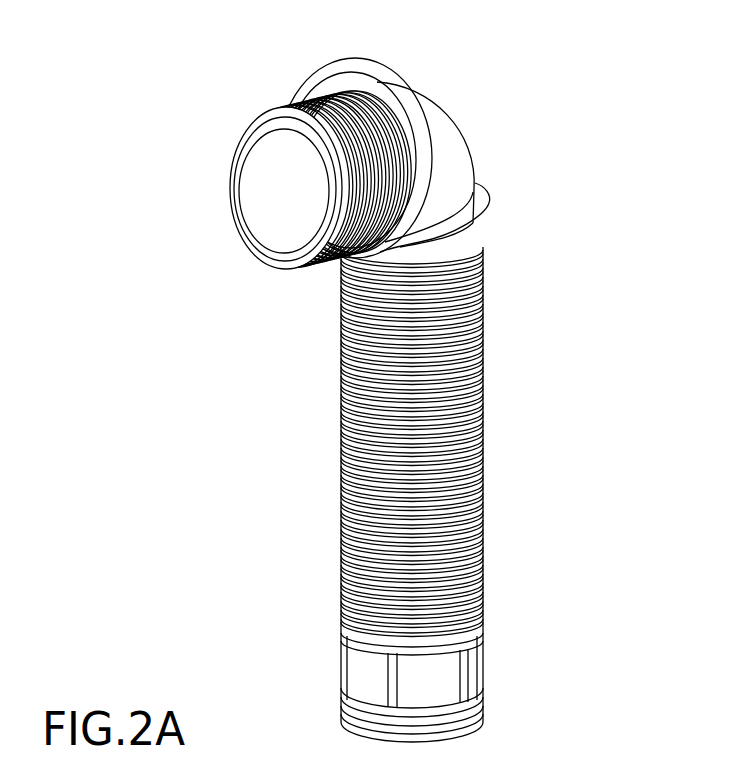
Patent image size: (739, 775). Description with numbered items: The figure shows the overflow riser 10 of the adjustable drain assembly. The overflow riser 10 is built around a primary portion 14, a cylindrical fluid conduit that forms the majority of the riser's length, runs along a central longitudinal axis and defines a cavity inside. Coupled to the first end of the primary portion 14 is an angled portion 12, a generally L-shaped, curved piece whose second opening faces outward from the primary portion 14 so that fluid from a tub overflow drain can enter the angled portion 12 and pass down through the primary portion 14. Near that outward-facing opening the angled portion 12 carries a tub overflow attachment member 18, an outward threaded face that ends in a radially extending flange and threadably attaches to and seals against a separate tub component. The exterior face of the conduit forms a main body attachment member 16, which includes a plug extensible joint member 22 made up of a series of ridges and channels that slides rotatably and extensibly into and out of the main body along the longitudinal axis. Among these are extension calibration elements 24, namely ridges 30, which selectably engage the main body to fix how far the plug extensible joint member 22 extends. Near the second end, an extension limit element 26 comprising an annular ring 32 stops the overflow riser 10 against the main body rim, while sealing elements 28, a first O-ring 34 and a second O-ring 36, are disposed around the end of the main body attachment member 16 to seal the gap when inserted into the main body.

The overflow riser 10 is at (585, 40).
The angled portion 12 is at (446, 120).
The primary portion 14 is at (571, 280).
The main body attachment member 16 is at (213, 717).
The tub overflow attachment member 18 is at (202, 238).
The plug extensible joint member 22 is at (508, 355).
The extension calibration elements 24 is at (269, 395).
The extension limit element 26 is at (493, 203).
The sealing elements 28 is at (554, 672).
The ridges 30 is at (343, 418).
The annular ring 32 is at (493, 211).
The first O-ring 34 is at (483, 706).
The second O-ring 36 is at (483, 690).